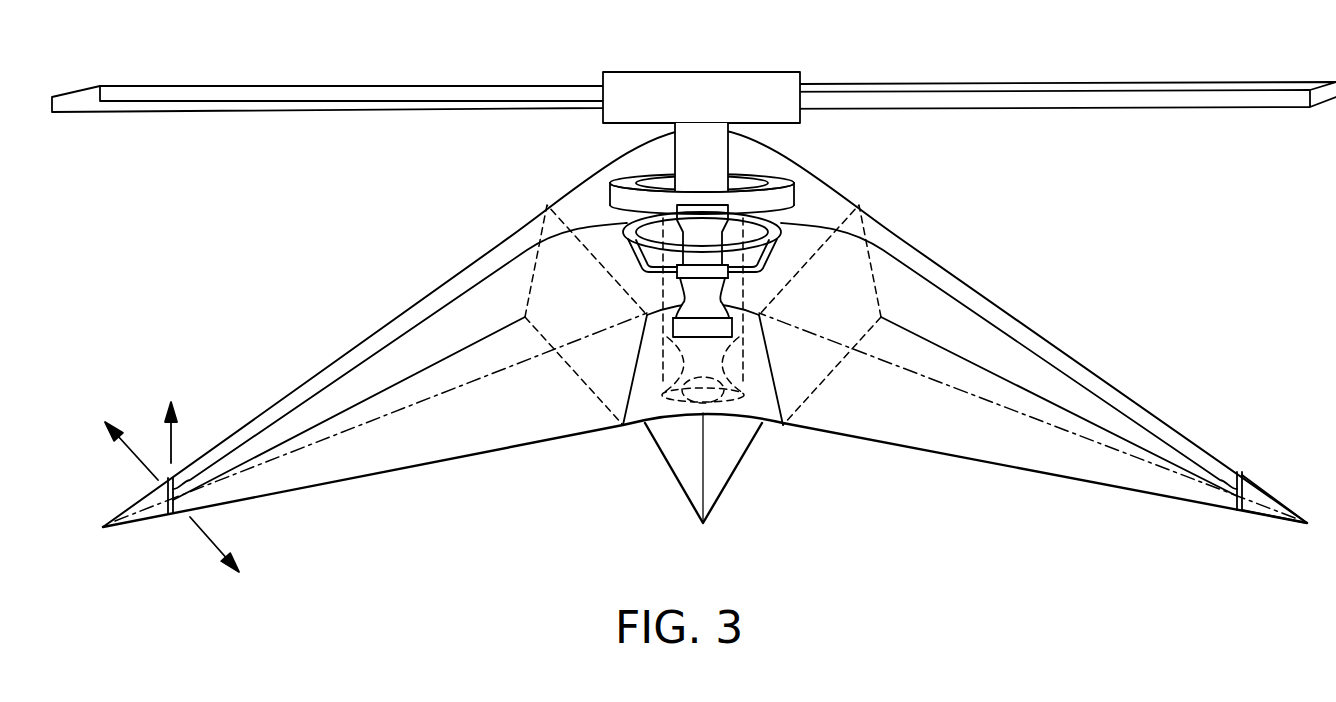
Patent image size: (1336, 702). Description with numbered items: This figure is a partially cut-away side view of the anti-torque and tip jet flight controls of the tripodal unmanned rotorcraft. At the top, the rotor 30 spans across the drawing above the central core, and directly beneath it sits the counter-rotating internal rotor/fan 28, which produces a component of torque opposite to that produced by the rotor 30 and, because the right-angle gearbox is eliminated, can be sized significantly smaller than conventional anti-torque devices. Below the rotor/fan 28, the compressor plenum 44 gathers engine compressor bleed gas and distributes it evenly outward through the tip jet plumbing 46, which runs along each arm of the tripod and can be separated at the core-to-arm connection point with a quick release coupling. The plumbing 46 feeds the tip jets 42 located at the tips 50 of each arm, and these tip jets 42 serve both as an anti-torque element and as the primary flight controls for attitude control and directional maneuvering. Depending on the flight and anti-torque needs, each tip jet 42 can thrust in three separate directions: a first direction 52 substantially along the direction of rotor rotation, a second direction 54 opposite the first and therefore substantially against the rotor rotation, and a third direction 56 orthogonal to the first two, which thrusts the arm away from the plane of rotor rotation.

The rotor 30 is at (1097, 84).
The internal rotor/fan 28 is at (805, 190).
The compressor plenum 44 is at (620, 210).
The tip jet plumbing 46 is at (1045, 352).
The tip jet 42 is at (1237, 472).
The tip 50 is at (1280, 520).
The first direction 52 is at (133, 456).
The second direction 54 is at (207, 538).
The third direction 56 is at (172, 443).